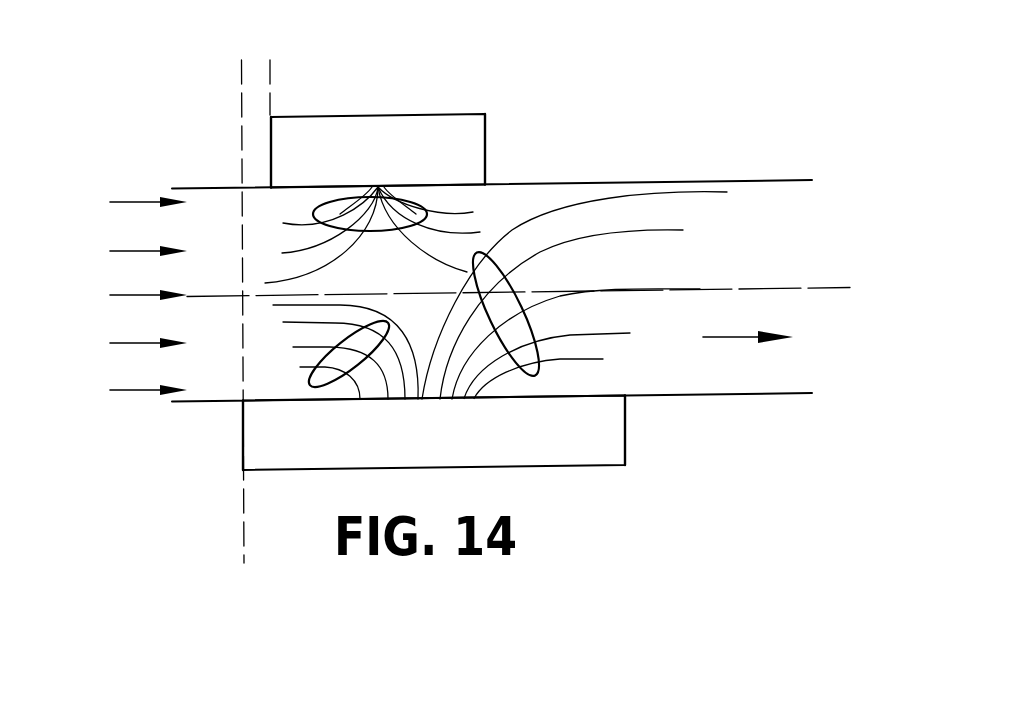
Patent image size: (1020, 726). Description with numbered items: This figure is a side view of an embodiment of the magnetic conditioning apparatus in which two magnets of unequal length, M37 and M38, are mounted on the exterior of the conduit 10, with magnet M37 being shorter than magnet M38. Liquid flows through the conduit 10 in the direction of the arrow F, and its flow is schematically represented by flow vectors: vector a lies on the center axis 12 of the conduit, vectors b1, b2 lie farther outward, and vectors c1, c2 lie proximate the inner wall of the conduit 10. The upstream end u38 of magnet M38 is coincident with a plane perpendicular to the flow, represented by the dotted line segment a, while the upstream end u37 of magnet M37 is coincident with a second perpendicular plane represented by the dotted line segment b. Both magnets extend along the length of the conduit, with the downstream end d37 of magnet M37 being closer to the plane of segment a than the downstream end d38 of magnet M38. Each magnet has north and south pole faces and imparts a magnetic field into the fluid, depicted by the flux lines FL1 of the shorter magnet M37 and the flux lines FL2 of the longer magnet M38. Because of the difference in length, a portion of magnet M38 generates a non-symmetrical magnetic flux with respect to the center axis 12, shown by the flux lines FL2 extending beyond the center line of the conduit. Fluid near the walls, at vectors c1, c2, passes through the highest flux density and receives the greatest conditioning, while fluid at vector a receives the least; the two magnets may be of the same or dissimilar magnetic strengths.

The conduit 10 is at (755, 177).
The center axis 12 is at (770, 289).
The magnet M37 is at (453, 140).
The magnet M38 is at (547, 468).
The upstream end of magnet M37 u37 is at (270, 150).
The downstream end of magnet M37 d37 is at (486, 138).
The upstream end of magnet M38 u38 is at (243, 430).
The downstream end of magnet M38 d38 is at (626, 428).
The flux lines FL1 is at (313, 213).
The flux lines FL2 is at (483, 253).
The direction of fluid flow F is at (748, 324).
The flow vector a is at (234, 77).
The dotted line segment b is at (276, 74).
The flow vector c1 is at (124, 195).
The flow vector b1 is at (124, 253).
The flow vector b2 is at (124, 345).
The flow vector c2 is at (124, 391).